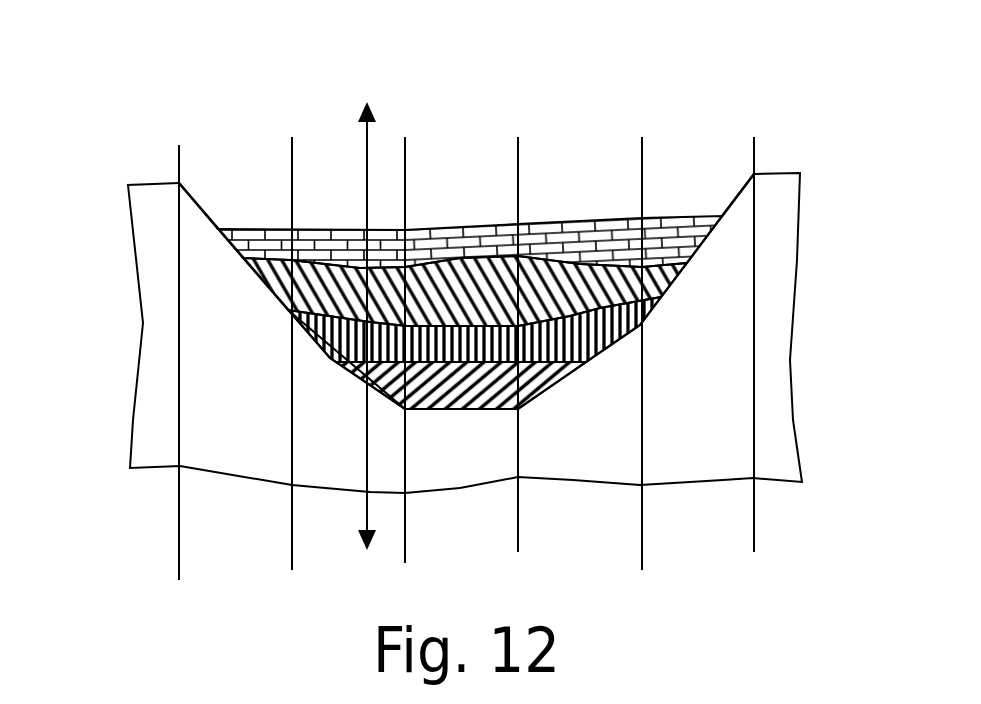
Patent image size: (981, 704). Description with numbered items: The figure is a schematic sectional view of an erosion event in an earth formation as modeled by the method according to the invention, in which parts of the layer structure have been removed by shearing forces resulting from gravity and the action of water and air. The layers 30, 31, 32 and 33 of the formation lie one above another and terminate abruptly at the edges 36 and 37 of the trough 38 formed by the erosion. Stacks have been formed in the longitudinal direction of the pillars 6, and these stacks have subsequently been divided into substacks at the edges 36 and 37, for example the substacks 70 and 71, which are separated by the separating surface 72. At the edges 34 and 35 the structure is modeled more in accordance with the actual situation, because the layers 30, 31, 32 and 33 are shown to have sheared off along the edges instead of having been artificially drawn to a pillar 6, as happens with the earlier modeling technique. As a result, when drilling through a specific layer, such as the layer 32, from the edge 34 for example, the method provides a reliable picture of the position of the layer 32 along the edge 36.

The pillars 6 is at (292, 555).
The layer 30 is at (245, 243).
The layer 31 is at (443, 299).
The layer 32 is at (583, 310).
The layer 33 is at (538, 367).
The edge 34 is at (180, 182).
The edge 35 is at (753, 173).
The edge of the trough 36 is at (237, 275).
The edge of the trough 37 is at (687, 268).
The trough 38 is at (466, 213).
The substack 70 is at (367, 145).
The substack 71 is at (367, 508).
The separating surface 72 is at (318, 360).